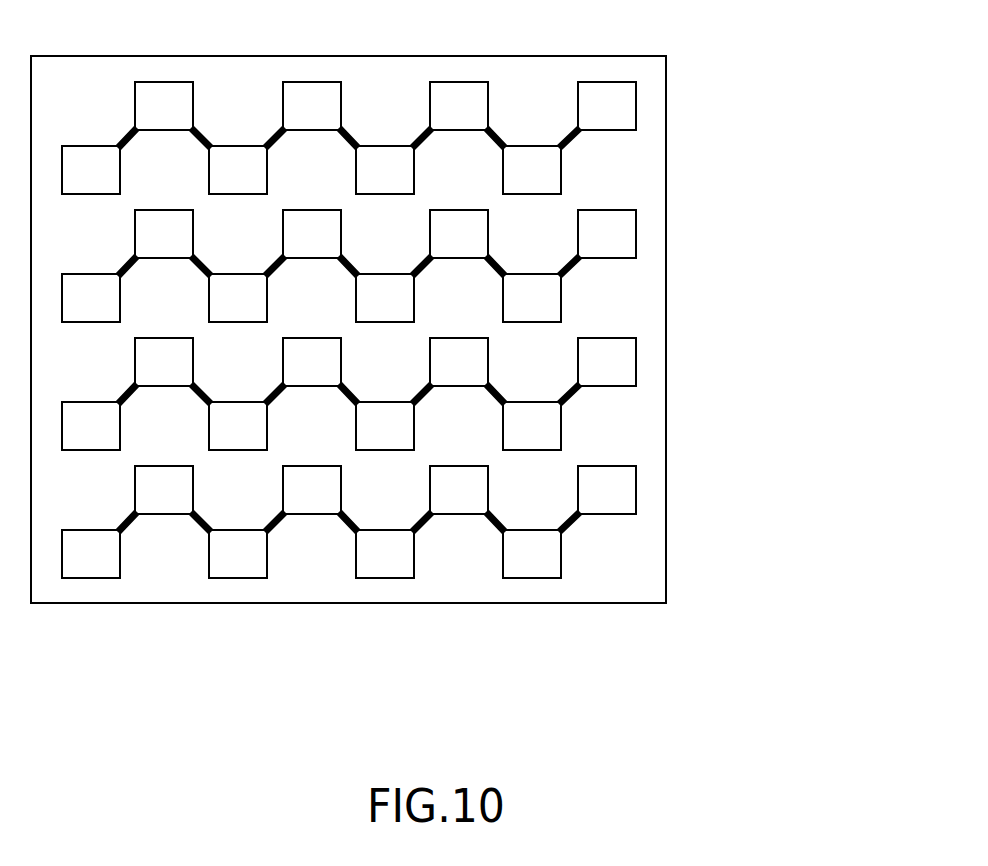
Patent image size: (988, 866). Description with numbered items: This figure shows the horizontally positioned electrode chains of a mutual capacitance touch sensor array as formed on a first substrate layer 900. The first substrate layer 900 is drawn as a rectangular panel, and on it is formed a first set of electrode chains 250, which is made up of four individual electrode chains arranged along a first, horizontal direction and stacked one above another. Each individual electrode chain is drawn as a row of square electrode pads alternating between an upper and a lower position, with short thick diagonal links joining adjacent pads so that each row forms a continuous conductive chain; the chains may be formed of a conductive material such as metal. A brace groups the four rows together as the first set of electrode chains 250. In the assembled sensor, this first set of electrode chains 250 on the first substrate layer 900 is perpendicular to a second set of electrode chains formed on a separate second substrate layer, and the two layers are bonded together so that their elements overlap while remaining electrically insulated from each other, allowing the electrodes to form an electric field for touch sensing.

The first substrate layer 900 is at (666, 88).
The first set of electrode chains 250 is at (446, 330).